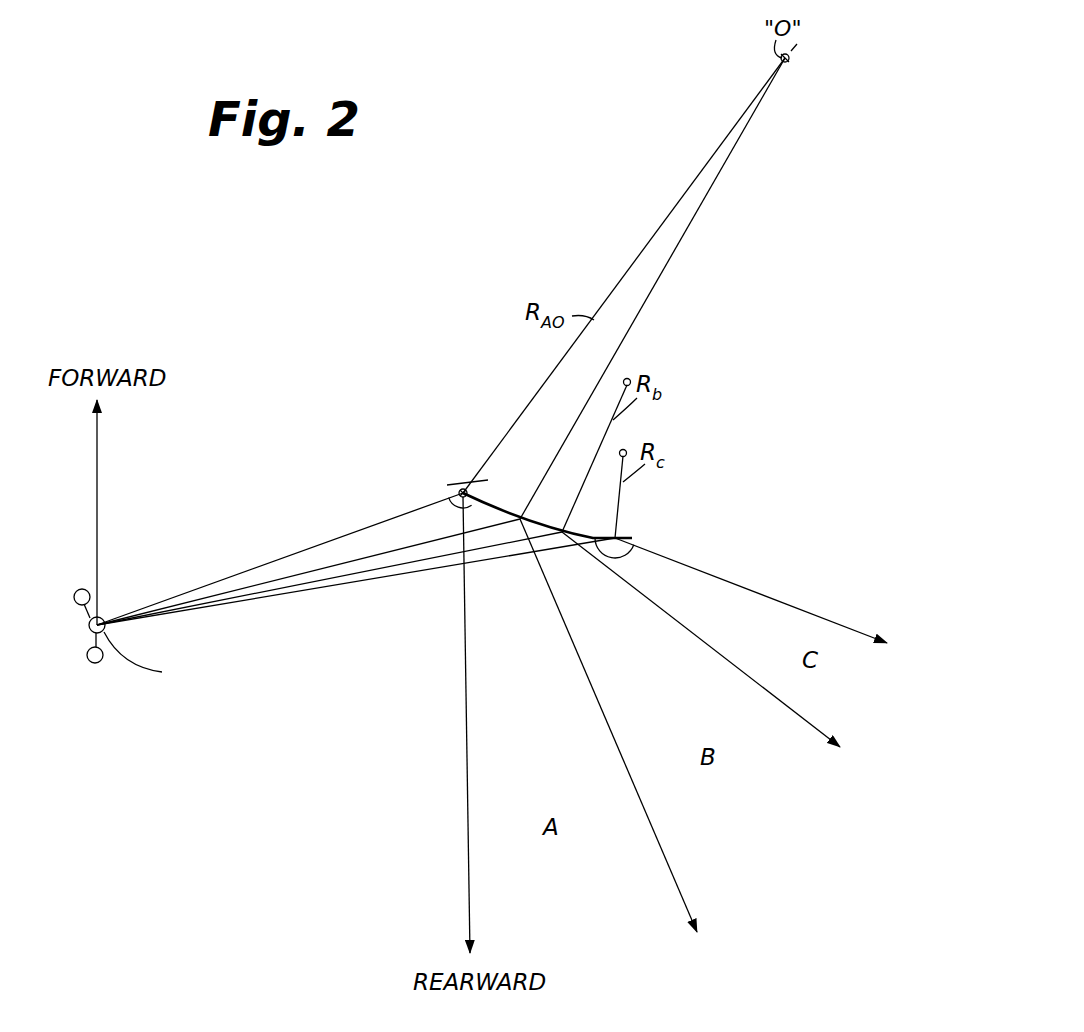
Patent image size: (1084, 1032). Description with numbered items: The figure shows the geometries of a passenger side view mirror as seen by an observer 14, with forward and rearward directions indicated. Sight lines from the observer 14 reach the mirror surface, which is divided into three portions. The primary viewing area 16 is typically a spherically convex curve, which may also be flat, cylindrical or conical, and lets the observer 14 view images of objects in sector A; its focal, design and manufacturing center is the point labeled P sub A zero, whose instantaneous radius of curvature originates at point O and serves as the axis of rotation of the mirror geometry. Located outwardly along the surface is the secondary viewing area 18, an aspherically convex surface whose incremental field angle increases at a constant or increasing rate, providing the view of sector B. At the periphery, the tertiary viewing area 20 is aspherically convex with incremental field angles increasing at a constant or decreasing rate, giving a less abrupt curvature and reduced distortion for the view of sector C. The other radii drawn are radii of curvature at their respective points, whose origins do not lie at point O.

The observer 14 is at (170, 640).
The primary viewing area 16 is at (447, 490).
The secondary viewing area 18 is at (536, 522).
The tertiary viewing area 20 is at (634, 545).